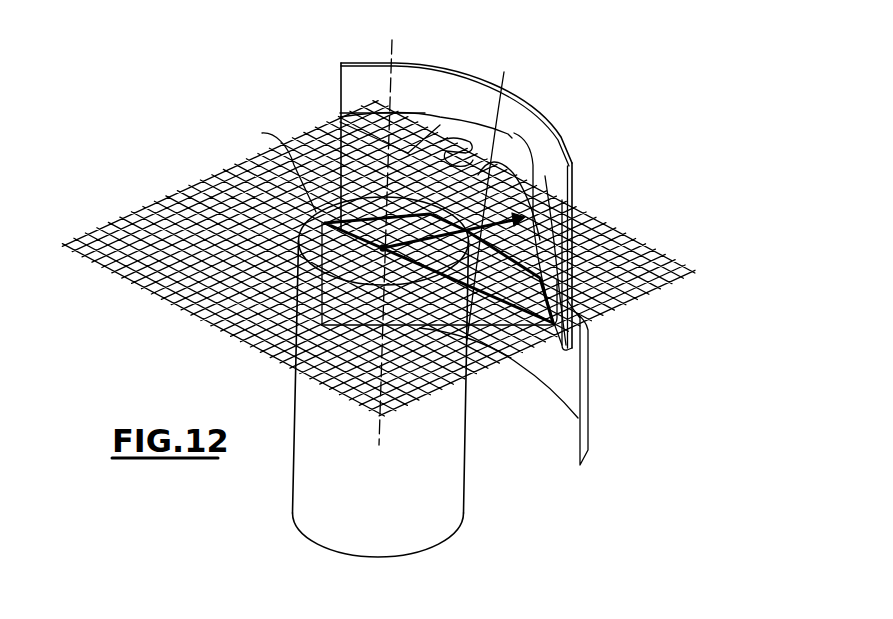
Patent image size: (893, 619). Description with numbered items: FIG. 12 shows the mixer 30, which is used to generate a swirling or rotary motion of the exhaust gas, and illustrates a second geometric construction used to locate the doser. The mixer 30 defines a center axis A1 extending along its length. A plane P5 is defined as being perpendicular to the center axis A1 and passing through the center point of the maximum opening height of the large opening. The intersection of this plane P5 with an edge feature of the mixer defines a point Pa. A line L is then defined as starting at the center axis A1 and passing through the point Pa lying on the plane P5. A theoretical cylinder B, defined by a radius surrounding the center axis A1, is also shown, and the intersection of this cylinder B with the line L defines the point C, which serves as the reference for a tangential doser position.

The mixer 30 is at (586, 120).
The center axis A1 is at (393, 32).
The theoretical cylinder B is at (276, 166).
The point C is at (504, 72).
The line L is at (500, 378).
The point Pa is at (547, 176).
The plane P5 is at (653, 256).